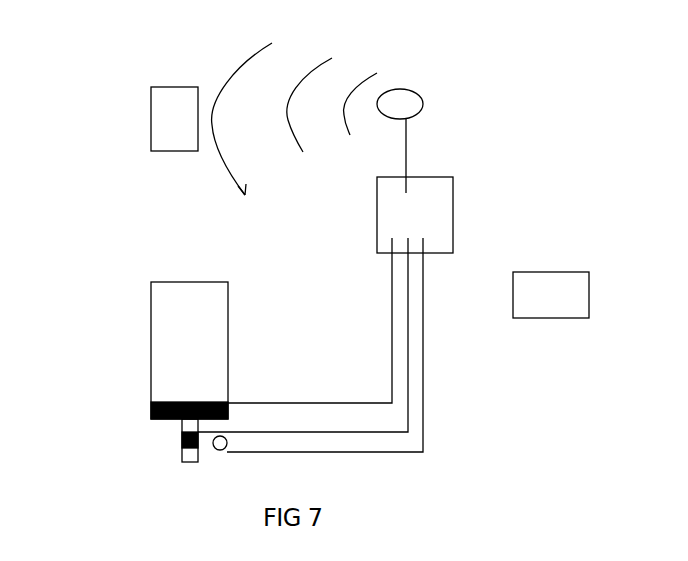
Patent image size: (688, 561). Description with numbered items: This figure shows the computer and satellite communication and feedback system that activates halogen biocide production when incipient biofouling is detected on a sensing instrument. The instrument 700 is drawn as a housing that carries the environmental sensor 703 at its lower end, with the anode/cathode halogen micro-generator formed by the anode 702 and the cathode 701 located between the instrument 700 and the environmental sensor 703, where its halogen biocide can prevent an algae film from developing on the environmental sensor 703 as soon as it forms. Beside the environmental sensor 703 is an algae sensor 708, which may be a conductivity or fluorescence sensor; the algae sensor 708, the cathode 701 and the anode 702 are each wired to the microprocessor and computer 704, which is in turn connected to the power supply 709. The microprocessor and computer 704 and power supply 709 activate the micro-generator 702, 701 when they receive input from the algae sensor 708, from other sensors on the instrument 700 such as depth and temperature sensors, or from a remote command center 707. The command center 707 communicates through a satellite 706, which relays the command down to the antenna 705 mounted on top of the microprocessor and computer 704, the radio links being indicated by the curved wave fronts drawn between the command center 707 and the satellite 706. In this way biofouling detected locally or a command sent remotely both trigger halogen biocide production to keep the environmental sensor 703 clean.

The instrument 700 is at (166, 314).
The cathode of halogen micro-generator 701 is at (152, 415).
The anode of halogen micro-generator 702 is at (182, 450).
The environmental sensor 703 is at (178, 459).
The microprocessor and computer 704 is at (439, 215).
The antenna 705 is at (433, 155).
The satellite 706 is at (332, 150).
The command center 707 is at (167, 133).
The algae sensor 708 is at (213, 449).
The power supply 709 is at (437, 257).